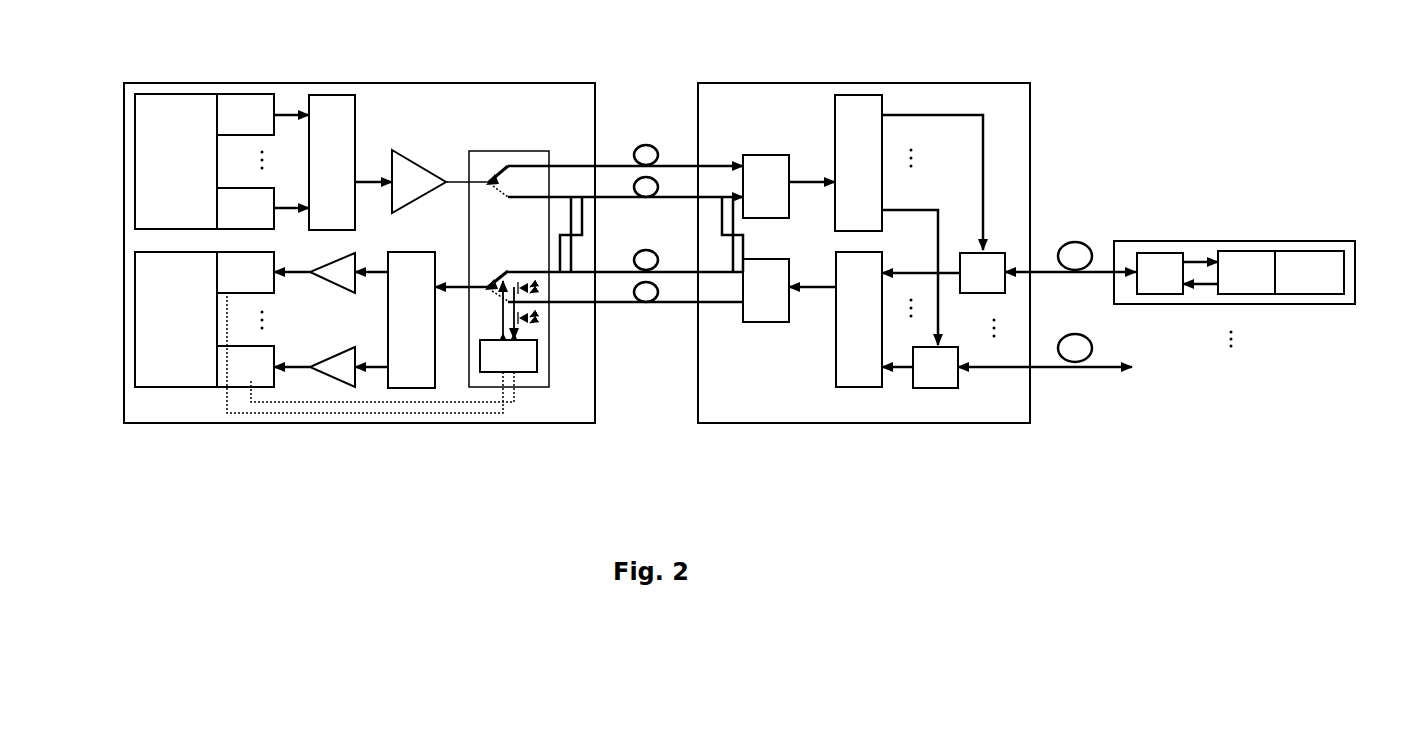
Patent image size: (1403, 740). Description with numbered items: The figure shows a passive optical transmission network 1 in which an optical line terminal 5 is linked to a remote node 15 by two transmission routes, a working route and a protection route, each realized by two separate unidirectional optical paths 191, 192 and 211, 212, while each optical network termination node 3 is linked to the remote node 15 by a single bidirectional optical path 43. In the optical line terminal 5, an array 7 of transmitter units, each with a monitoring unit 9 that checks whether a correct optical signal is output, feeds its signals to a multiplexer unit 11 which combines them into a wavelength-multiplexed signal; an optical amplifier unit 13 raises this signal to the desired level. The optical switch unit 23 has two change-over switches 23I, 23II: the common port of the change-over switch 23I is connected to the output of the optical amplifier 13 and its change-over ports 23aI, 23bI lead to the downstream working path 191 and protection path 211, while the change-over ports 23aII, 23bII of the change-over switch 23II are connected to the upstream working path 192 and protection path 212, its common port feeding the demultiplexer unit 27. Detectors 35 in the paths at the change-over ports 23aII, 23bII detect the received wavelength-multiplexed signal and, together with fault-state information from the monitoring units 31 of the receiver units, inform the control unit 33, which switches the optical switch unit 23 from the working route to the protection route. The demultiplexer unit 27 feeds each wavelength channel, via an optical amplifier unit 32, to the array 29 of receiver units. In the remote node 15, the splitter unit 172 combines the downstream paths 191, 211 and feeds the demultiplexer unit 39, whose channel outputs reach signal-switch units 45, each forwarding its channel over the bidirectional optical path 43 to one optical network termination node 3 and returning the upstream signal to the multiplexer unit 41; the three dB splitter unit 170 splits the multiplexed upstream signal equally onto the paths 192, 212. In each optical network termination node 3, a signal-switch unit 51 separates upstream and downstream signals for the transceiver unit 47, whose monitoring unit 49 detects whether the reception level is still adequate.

The passive optical transmission network 1 is at (568, 41).
The optical network termination node (ONU) 3 is at (1212, 243).
The optical line terminal (OLT) 5 is at (395, 90).
The array of transmitter units 7 is at (163, 107).
The monitoring unit 9 is at (243, 107).
The multiplexer unit 11 is at (320, 105).
The optical amplifier unit 13 is at (402, 162).
The remote node (RN) 15 is at (955, 87).
The optical switch unit 23 is at (487, 153).
The change-over switch 23I is at (498, 194).
The change-over switch 23II is at (484, 270).
The change-over port 23aI is at (550, 166).
The change-over port 23bI is at (551, 196).
The change-over port 23aII is at (553, 273).
The change-over port 23bII is at (553, 303).
The demultiplexer unit 27 is at (430, 390).
The array of receiver units 29 is at (180, 389).
The monitoring unit 31 is at (258, 285).
The optical amplifier unit 32 is at (342, 292).
The control unit 33 is at (528, 373).
The detector 35 is at (533, 288).
The demultiplexer unit 39 is at (848, 103).
The multiplexer unit 41 is at (835, 366).
The bidirectional optical path 43 is at (1066, 242).
The signal-switch unit 45 is at (996, 250).
The transceiver unit 47 is at (1287, 298).
The monitoring unit 49 is at (1236, 290).
The signal-switch unit 51 is at (1146, 258).
The 3 dB splitter unit 170 is at (752, 312).
The optical splitter unit 172 is at (784, 156).
The optical working path 191 is at (657, 157).
The optical working path 192 is at (652, 196).
The optical protection path 211 is at (637, 265).
The optical protection path 212 is at (640, 302).